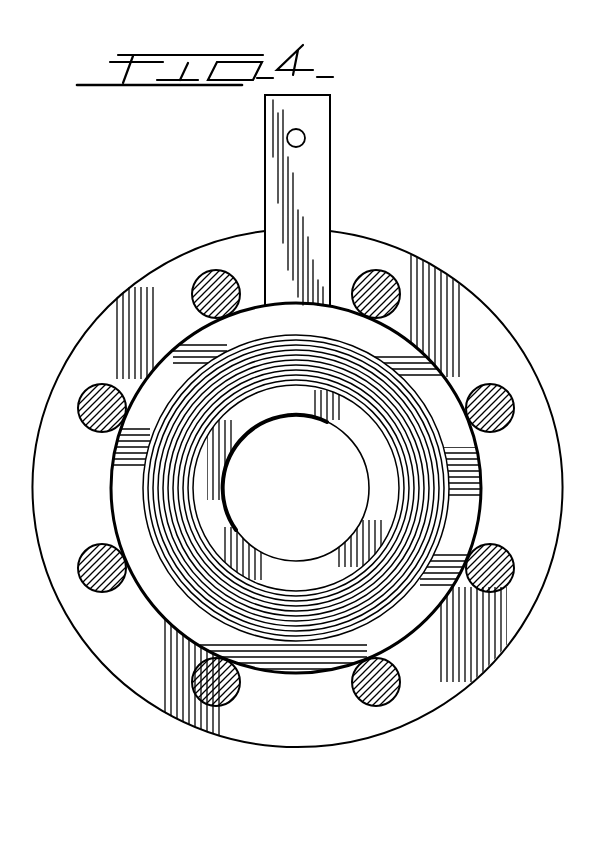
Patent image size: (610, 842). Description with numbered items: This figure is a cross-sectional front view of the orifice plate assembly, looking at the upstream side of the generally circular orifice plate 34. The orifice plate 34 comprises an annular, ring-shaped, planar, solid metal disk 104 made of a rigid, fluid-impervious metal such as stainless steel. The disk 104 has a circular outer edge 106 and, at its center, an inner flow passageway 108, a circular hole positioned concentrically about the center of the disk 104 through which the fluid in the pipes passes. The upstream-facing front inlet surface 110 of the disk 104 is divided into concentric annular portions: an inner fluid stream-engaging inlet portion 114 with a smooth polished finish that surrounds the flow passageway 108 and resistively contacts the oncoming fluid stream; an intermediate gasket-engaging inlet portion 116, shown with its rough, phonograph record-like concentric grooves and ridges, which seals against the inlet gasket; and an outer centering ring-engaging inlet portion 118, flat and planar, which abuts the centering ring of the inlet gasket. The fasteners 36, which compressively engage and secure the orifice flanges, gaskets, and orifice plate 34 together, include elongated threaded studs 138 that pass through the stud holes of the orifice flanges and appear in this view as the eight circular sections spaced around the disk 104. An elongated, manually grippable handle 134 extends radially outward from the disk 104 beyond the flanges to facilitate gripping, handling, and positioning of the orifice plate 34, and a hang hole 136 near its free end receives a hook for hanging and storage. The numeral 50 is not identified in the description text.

The orifice plate 34 is at (175, 634).
The fasteners 36 is at (390, 273).
The bolt hole 50 is at (517, 578).
The disk 104 is at (403, 625).
The outer edge 106 is at (438, 373).
The inner flow passageway 108 is at (353, 528).
The front inlet surface 110 is at (468, 478).
The inner fluid stream-engaging inlet portion 114 is at (345, 413).
The intermediate gasket-engaging inlet portion 116 is at (190, 398).
The outer centering ring-engaging inlet portion 118 is at (125, 460).
The handle 134 is at (265, 175).
The hang hole 136 is at (305, 135).
The threaded studs 138 is at (383, 690).